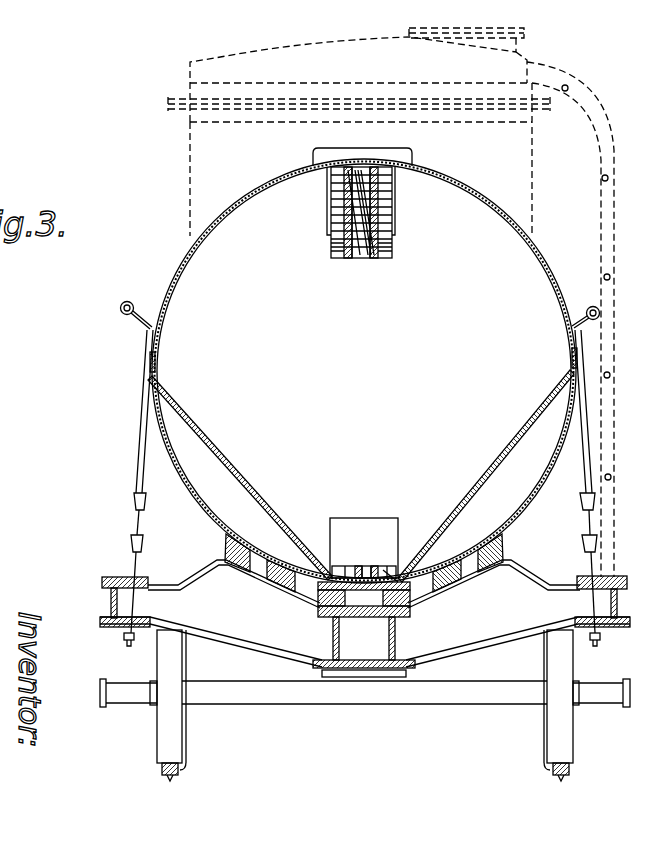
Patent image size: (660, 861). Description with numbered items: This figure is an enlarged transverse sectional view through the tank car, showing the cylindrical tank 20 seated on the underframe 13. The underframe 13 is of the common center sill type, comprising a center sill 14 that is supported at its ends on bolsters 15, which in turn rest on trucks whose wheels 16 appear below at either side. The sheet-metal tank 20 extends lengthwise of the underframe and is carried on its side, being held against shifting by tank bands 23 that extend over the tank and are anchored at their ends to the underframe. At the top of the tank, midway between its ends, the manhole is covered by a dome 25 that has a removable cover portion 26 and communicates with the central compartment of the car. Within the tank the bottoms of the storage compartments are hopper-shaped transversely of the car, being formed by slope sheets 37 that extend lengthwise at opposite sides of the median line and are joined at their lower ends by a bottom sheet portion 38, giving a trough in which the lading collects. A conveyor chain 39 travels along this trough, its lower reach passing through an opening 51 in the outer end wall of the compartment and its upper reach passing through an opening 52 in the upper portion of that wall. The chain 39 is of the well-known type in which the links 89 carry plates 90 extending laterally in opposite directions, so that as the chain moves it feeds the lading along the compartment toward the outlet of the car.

The underframe 13 is at (404, 678).
The center sill 14 is at (333, 637).
The bolsters 15 is at (366, 686).
The wheels 16 is at (172, 722).
The cylindrical tank 20 is at (176, 270).
The tank bands 23 is at (284, 178).
The dome 25 is at (200, 155).
The removable cover portion 26 is at (206, 56).
The slope sheets 37 is at (240, 476).
The bottom sheet portion 38 is at (388, 574).
The chain 39 is at (368, 236).
The opening 51 is at (362, 522).
The opening 52 is at (396, 210).
The links 89 is at (378, 232).
The plates 90 is at (337, 253).